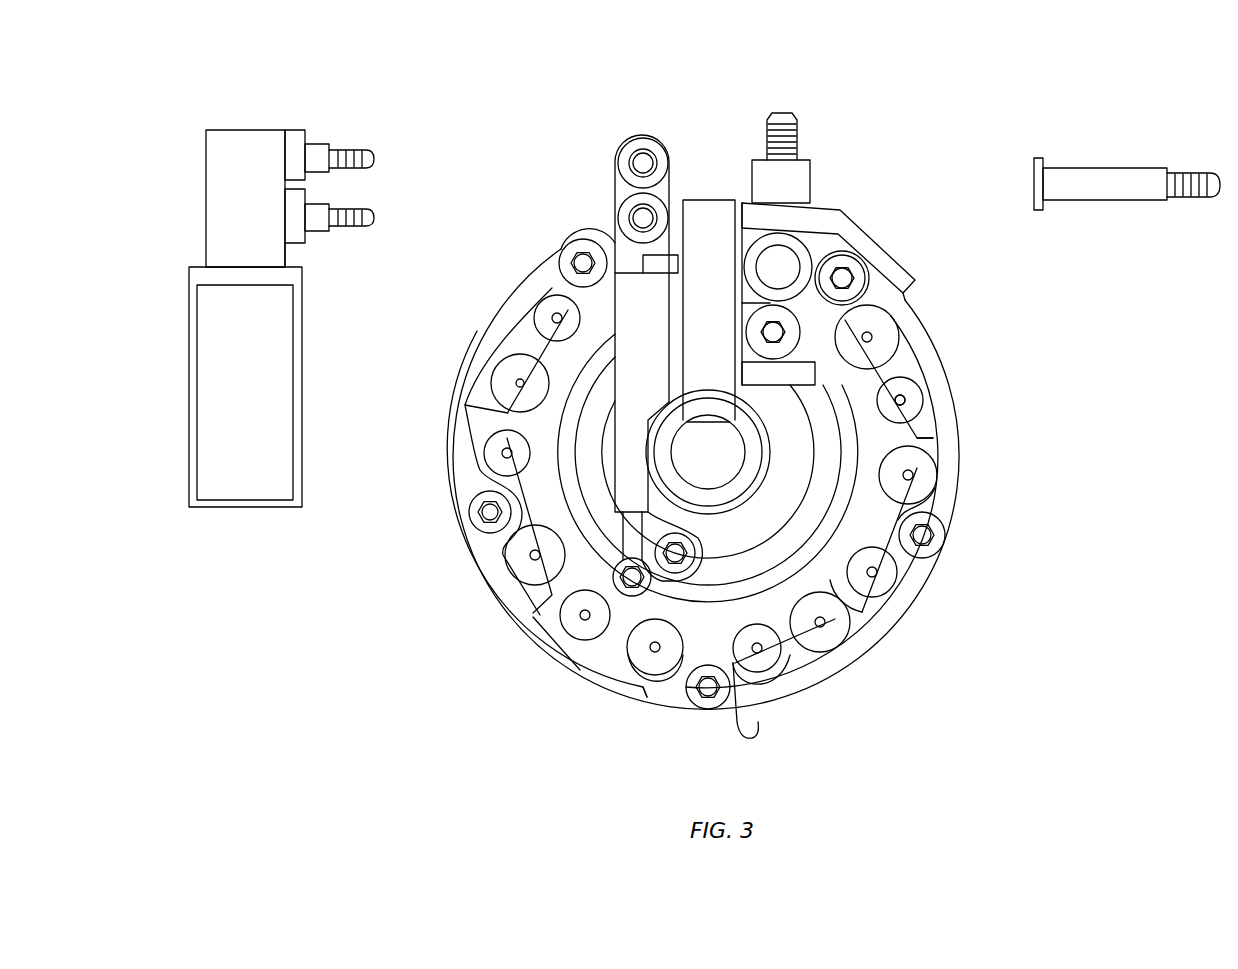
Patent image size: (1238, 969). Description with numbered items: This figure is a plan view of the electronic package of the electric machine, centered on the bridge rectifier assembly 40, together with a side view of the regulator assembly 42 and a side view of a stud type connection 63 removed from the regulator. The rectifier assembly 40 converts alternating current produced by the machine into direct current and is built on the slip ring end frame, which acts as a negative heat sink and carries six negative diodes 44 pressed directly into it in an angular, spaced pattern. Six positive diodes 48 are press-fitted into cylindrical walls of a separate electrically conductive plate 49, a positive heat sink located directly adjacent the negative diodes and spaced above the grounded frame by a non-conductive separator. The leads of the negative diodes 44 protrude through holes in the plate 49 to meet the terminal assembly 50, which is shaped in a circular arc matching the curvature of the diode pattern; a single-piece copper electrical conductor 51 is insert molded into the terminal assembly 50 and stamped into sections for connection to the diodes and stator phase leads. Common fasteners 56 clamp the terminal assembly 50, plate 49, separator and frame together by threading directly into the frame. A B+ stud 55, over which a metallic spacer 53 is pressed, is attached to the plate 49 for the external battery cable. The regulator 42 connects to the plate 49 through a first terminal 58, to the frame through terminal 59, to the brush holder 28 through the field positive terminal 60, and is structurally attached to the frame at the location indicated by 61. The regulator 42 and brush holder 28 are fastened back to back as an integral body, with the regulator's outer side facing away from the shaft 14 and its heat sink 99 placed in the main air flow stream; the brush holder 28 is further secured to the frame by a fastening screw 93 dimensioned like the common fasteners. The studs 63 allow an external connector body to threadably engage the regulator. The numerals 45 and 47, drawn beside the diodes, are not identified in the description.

The shaft 14 is at (723, 487).
The brush holder 28 is at (703, 200).
The rectifier assembly 40 is at (1050, 338).
The regulator assembly 42 is at (250, 130).
The negative diodes 44 is at (915, 396).
The roller pin 45 is at (905, 401).
The roller stop 47 is at (912, 413).
The positive diodes 48 is at (925, 482).
The plate 49 is at (868, 632).
The terminal assembly 50 is at (547, 648).
The electrical conductor 51 is at (898, 338).
The spacer 53 is at (812, 175).
The B+ stud 55 is at (782, 112).
The common fasteners 56 is at (470, 520).
The first terminal 58 is at (630, 597).
The terminal 59 is at (683, 578).
The field positive (F+) terminal 60 is at (655, 275).
The structural attachment of regulator to SRE frame 61 is at (565, 262).
The stud type connection 63 is at (376, 158).
The fastening screw 93 is at (800, 334).
The heat sink 99 is at (674, 337).